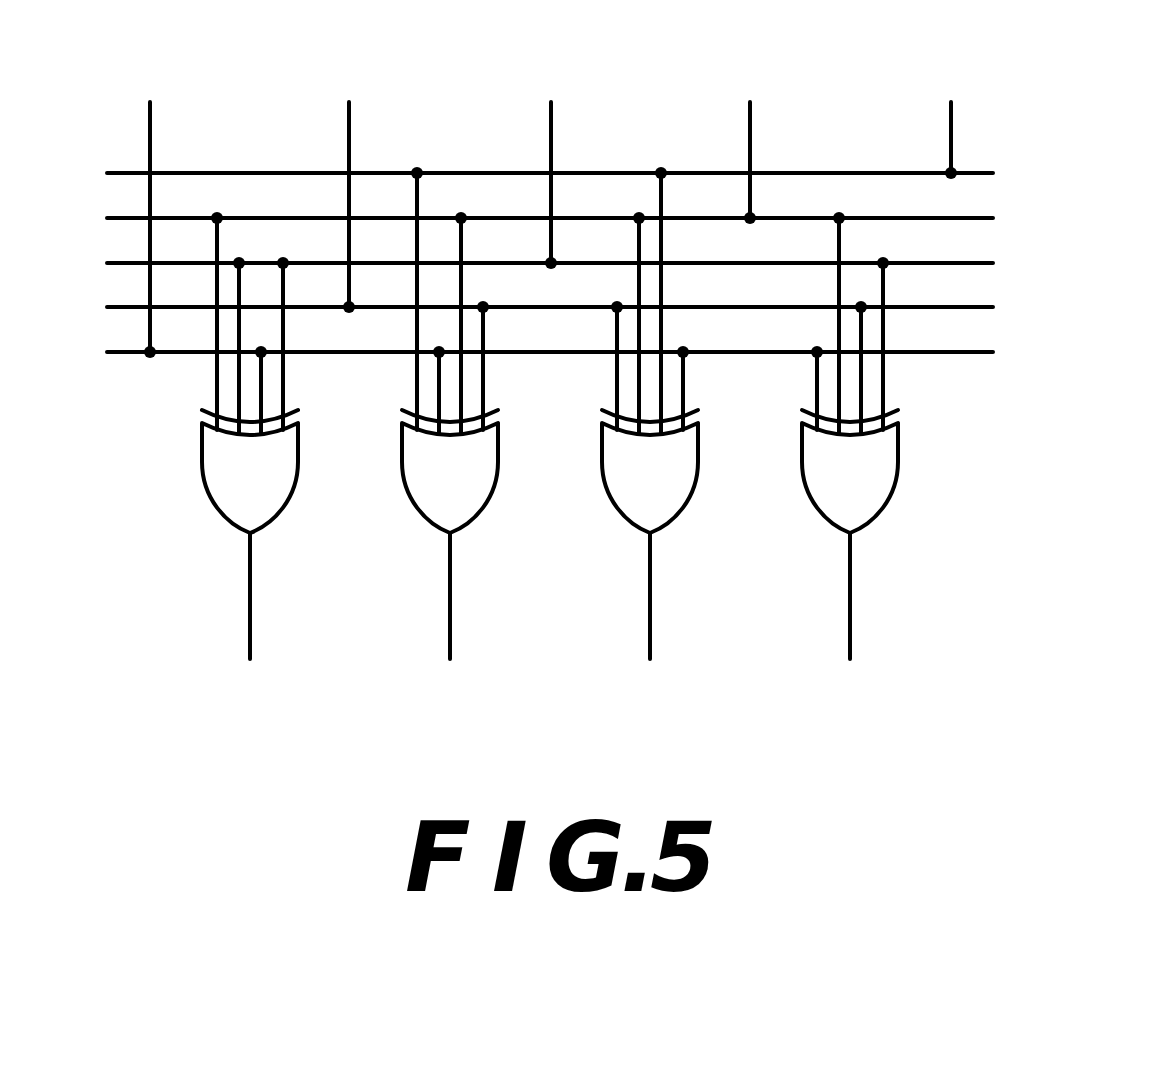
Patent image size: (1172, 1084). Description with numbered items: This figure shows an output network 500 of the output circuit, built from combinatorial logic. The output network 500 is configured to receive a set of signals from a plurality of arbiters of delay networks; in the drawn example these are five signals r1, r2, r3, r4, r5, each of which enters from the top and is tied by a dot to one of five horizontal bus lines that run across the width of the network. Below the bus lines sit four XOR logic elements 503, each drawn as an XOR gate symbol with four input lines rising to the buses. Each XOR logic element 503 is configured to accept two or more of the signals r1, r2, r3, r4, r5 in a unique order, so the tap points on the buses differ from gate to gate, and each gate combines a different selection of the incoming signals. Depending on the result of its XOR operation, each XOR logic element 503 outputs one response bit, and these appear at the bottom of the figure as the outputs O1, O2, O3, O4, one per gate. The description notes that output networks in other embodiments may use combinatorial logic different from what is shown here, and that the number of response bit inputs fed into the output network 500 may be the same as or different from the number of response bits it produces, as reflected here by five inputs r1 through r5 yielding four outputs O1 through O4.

The output network 500 is at (635, 393).
The XOR logic element 503 is at (218, 488).
The signal r1 is at (958, 110).
The signal r2 is at (757, 133).
The signal r3 is at (558, 155).
The signal r4 is at (356, 177).
The signal r5 is at (157, 200).
The output O1 is at (859, 626).
The output O2 is at (659, 626).
The output O3 is at (459, 626).
The output O4 is at (259, 626).